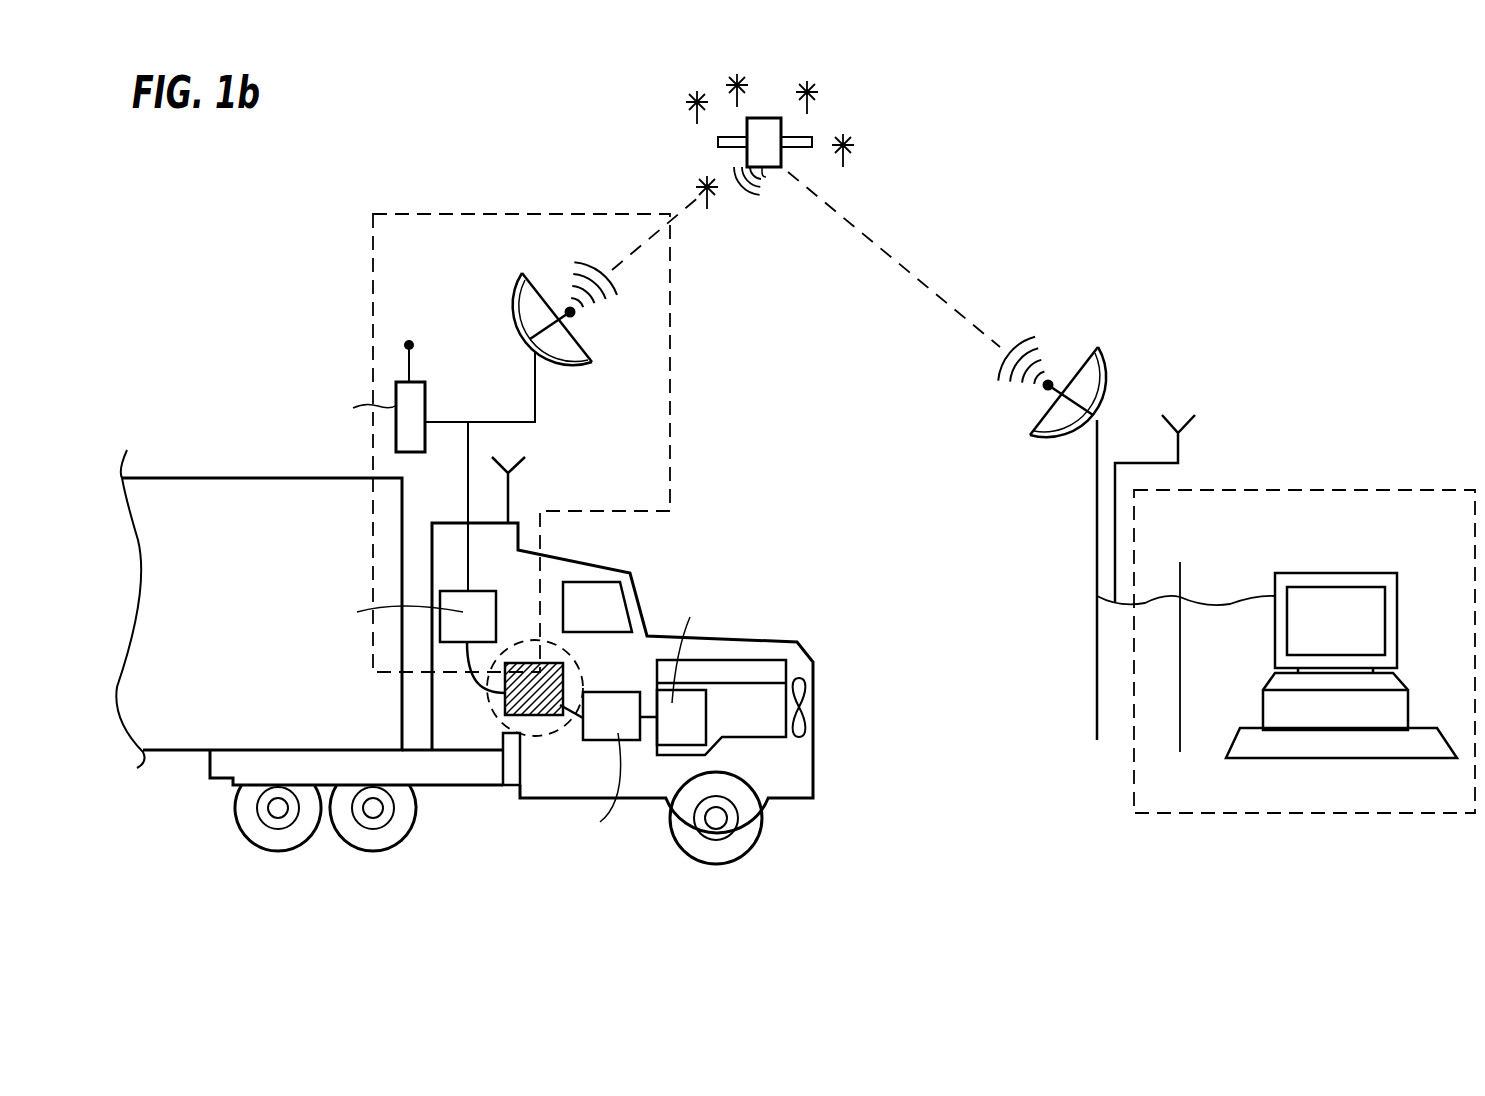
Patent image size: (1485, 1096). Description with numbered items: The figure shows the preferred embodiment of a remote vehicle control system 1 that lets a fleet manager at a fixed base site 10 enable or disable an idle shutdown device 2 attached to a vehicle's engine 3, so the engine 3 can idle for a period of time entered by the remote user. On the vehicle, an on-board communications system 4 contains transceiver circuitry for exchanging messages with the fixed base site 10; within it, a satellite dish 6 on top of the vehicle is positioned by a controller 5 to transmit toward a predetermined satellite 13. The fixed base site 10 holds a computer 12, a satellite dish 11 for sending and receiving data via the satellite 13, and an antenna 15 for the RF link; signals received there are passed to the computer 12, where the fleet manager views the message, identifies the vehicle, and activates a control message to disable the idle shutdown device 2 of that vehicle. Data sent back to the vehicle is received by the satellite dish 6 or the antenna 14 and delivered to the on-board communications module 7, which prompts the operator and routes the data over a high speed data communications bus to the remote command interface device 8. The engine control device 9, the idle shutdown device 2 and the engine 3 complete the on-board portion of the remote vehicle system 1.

The vehicle control system 1 is at (1000, 157).
The idle shutdown device 2 is at (706, 727).
The engine 3 is at (773, 705).
The on-board communications system 4 is at (460, 230).
The controller 5 is at (425, 386).
The satellite dish 6 is at (545, 313).
The on-board communications module 7 is at (463, 612).
The remote command interface device 8 is at (534, 716).
The engine control device 9 is at (598, 688).
The fixed base site 10 is at (1257, 503).
The satellite dish 11 is at (1077, 373).
The computer 12 is at (1318, 565).
The satellite 13 is at (770, 141).
The antenna 14 is at (520, 472).
The antenna 15 is at (1177, 410).